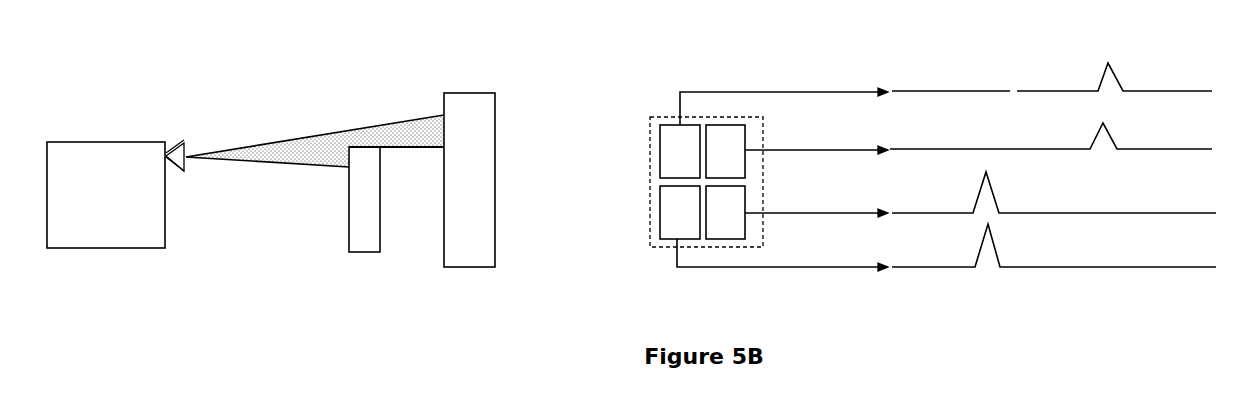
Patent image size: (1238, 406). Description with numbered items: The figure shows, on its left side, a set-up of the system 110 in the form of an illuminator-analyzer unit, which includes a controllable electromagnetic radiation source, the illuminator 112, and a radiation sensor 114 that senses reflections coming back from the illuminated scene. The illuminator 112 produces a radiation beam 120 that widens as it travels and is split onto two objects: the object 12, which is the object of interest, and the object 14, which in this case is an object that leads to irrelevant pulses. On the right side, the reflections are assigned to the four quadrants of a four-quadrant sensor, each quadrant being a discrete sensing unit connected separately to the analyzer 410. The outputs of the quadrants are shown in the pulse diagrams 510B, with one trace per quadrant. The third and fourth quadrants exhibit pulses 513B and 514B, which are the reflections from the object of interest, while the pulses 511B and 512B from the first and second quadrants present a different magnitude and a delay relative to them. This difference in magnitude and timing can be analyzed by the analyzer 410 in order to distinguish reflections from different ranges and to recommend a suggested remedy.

The system 110 is at (128, 142).
The controllable electromagnetic radiation source 112 is at (181, 141).
The radiation sensor 114 is at (181, 172).
The radiation beam 120 is at (376, 126).
The object of interest 12 is at (381, 233).
The object leading to irrelevant pulses 14 is at (496, 216).
The analyzer 410 is at (658, 117).
The pulse diagrams 510B is at (1053, 178).
The pulse 511B is at (1105, 64).
The pulse 512B is at (1100, 124).
The pulse 513B is at (982, 186).
The pulse 514B is at (982, 252).